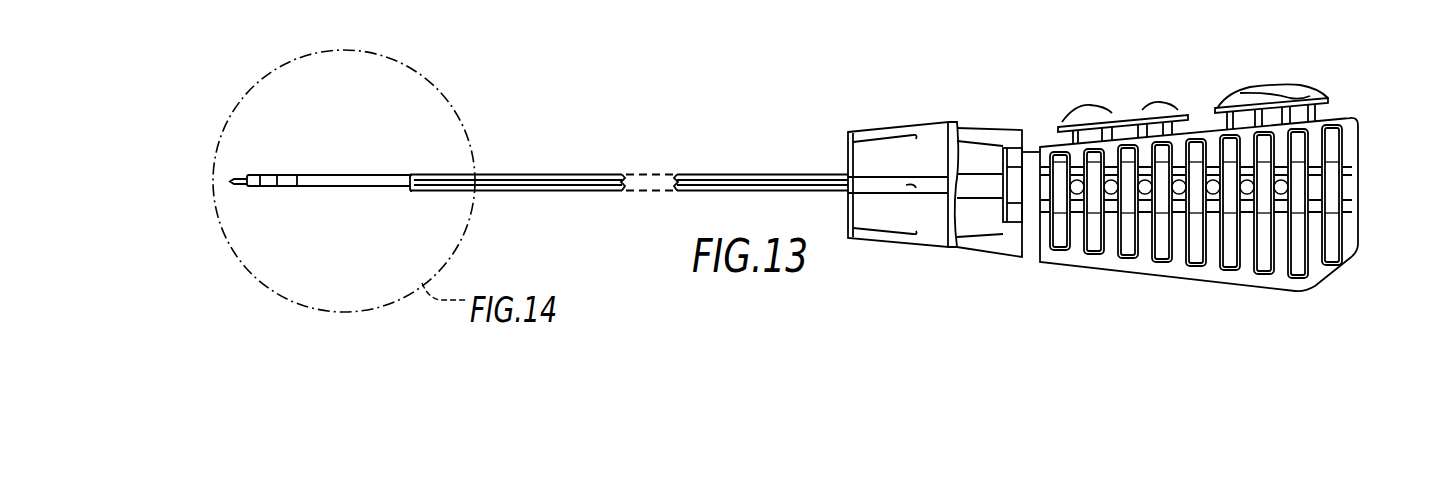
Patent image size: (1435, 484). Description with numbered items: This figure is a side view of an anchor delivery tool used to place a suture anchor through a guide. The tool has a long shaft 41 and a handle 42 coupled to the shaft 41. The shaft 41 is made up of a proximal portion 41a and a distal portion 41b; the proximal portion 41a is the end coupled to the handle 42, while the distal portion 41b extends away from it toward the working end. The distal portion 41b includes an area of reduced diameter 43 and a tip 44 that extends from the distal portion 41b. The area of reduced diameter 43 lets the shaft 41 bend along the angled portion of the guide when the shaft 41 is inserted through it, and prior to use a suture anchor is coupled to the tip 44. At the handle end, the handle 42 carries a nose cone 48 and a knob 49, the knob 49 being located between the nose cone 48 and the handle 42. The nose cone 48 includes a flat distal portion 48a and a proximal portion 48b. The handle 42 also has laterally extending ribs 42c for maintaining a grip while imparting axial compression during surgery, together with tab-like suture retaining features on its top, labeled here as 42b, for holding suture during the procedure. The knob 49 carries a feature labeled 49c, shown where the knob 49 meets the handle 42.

The shaft 41 is at (523, 173).
The proximal portion 41a is at (750, 175).
The distal portion 41b is at (362, 190).
The handle 42 is at (1199, 218).
The handle tabs 42b is at (1118, 105).
The laterally extending ribs 42c is at (1147, 240).
The area of reduced diameter 43 is at (338, 173).
The tip 44 is at (238, 178).
The nose cone 48 is at (872, 134).
The flat distal portion 48a is at (845, 157).
The proximal portion 48b is at (957, 123).
The knob 49 is at (990, 252).
The connector block 49c is at (1017, 153).